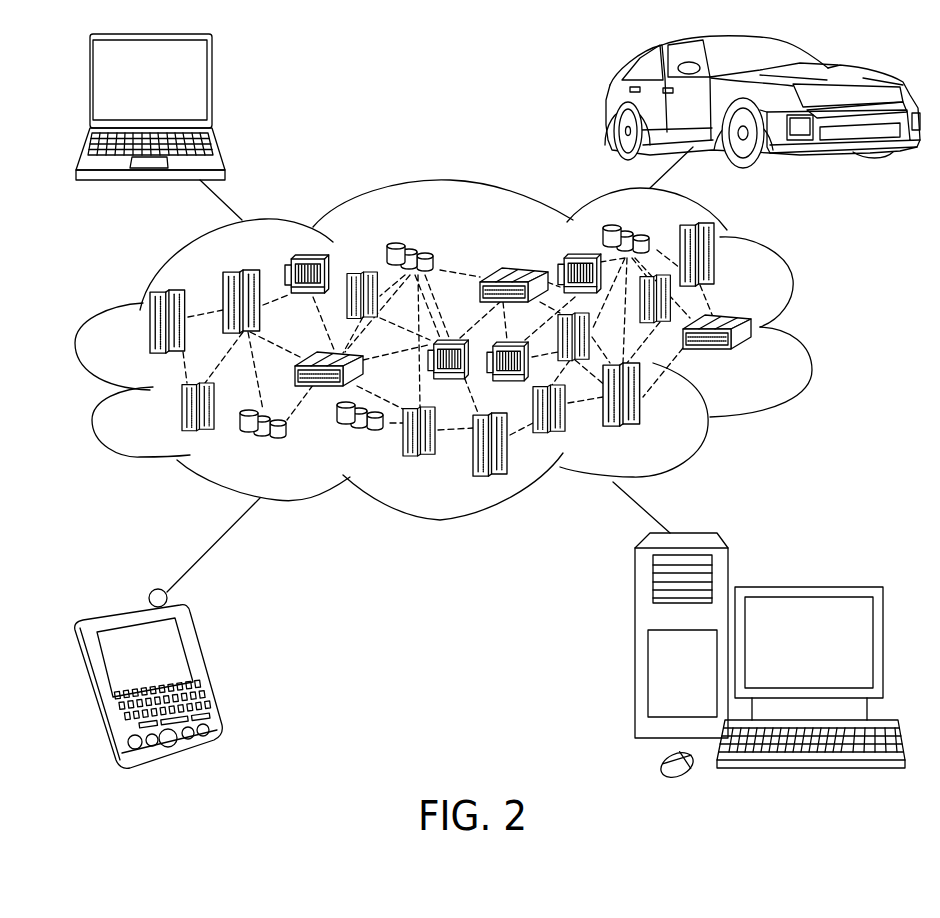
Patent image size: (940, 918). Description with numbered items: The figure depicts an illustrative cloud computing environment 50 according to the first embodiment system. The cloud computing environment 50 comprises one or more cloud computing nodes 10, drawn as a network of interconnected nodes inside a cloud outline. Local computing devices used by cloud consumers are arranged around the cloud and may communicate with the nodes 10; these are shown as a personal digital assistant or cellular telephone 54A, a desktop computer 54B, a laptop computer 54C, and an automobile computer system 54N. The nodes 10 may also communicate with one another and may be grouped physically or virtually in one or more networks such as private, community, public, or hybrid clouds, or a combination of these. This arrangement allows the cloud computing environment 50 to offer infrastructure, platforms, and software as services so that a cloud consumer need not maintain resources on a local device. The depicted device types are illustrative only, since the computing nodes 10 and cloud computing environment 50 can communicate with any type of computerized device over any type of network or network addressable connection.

The cloud computing nodes 10 is at (760, 360).
The cloud computing environment 50 is at (805, 333).
The personal digital assistant (PDA) or cellular telephone 54A is at (203, 670).
The desktop computer 54B is at (803, 587).
The laptop computer 54C is at (212, 89).
The automobile computer system 54N is at (610, 103).